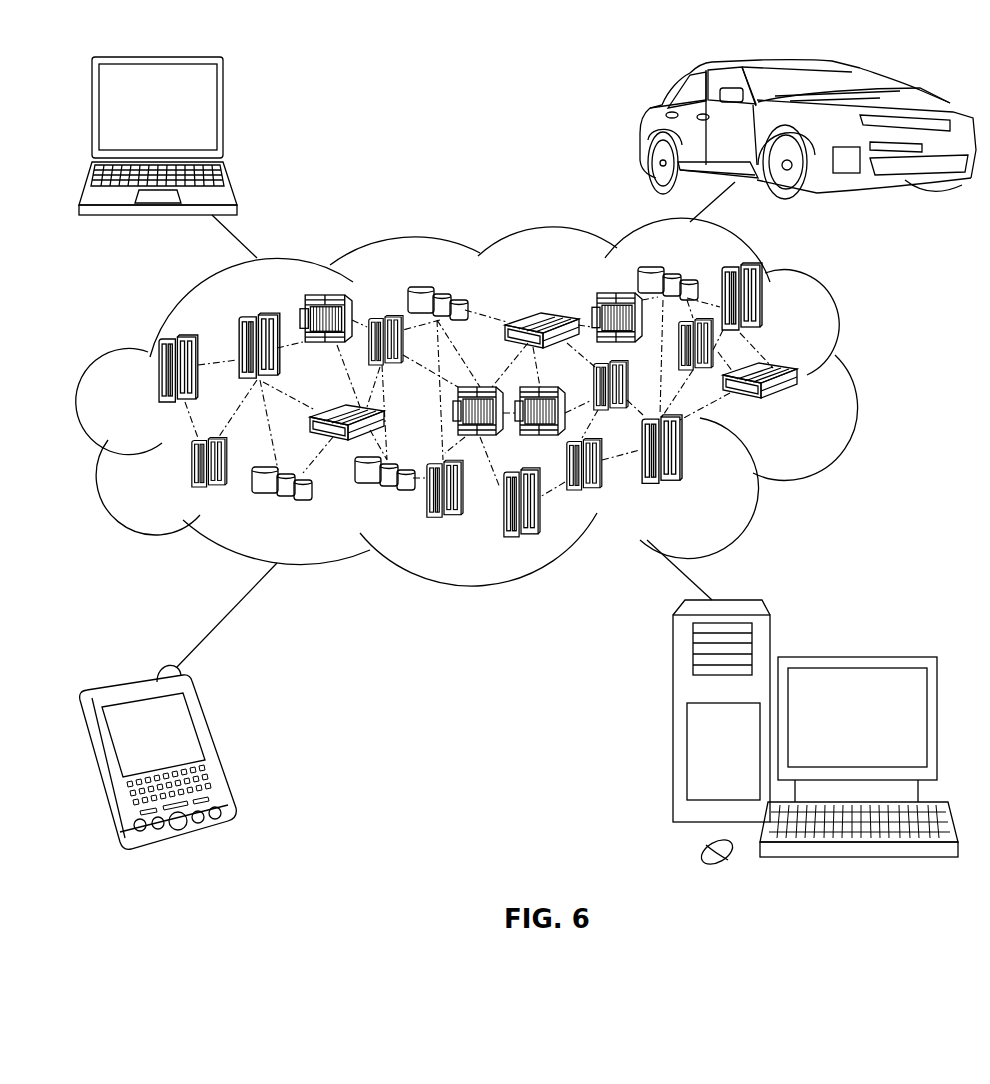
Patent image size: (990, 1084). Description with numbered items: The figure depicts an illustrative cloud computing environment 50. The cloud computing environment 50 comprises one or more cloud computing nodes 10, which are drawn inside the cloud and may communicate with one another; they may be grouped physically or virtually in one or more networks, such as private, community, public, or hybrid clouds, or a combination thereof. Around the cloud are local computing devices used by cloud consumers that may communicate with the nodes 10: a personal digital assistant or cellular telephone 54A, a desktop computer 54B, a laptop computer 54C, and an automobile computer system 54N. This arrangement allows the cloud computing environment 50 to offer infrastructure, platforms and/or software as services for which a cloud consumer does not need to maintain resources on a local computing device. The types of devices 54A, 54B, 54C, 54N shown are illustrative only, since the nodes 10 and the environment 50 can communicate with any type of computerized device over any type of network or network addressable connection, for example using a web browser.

The cloud computing node 10 is at (803, 409).
The cloud computing environment 50 is at (855, 378).
The personal digital assistant or cellular telephone 54A is at (215, 747).
The desktop computer 54B is at (855, 655).
The laptop computer 54C is at (224, 117).
The automobile computer system 54N is at (647, 133).